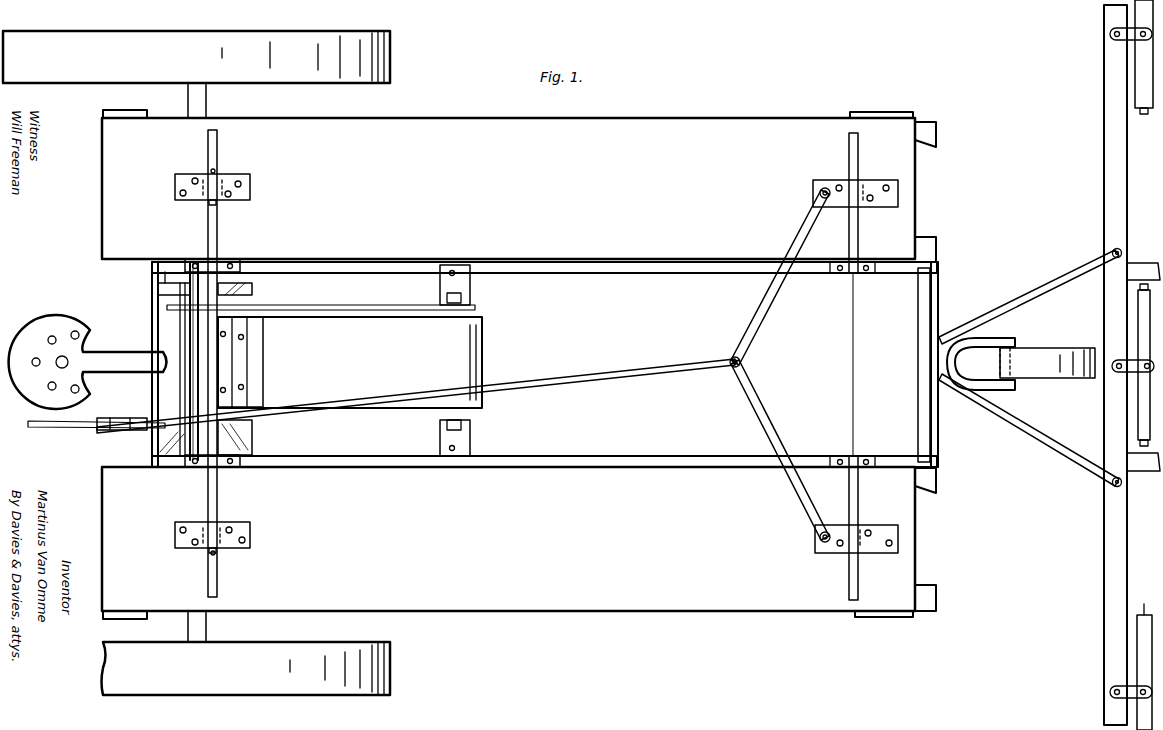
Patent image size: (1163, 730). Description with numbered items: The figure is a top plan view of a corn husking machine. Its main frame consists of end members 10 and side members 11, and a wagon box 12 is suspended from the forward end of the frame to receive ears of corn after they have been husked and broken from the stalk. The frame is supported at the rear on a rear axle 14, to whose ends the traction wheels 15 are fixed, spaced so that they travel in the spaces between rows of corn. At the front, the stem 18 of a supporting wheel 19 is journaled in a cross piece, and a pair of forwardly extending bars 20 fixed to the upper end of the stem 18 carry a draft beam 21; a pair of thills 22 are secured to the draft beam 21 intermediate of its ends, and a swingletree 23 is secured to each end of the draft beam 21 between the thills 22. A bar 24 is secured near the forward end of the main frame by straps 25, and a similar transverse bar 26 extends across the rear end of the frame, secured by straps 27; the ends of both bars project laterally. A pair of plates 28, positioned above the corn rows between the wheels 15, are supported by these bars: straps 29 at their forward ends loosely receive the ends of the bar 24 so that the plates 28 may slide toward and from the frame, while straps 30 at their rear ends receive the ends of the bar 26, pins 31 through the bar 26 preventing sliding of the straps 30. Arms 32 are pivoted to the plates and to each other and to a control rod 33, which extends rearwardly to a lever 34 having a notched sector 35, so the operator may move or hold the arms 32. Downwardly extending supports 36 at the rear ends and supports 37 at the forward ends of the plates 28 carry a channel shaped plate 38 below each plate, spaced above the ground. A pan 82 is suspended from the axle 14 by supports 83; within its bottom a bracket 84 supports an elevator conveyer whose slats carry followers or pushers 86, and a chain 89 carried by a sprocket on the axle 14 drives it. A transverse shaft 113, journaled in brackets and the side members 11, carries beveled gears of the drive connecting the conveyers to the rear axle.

The end members of the main frame 10 is at (152, 300).
The side members 11 is at (528, 266).
The wagon box 12 is at (648, 275).
The rear axle 14 is at (206, 100).
The traction wheels 15 is at (196, 363).
The stem 18 is at (945, 345).
The supporting wheel 19 is at (1045, 356).
The forwardly extending bars 20 is at (1035, 288).
The draft beam 21 is at (1104, 148).
The thills 22 is at (1140, 263).
The swingletree 23 is at (1140, 82).
The bar 24 is at (849, 151).
The straps 25 is at (862, 264).
The transverse bar 26 is at (217, 222).
The straps 27 is at (218, 262).
The plates 28 is at (519, 364).
The straps 29 is at (868, 185).
The straps 30 is at (250, 190).
The pins 31 is at (215, 170).
The arms 32 is at (760, 326).
The control rod 33 is at (515, 390).
The lever 34 is at (67, 426).
The notched sector 35 is at (113, 418).
The downwardly extending supports 36 is at (130, 115).
The supports 37 is at (875, 116).
The channel shaped plate 38 is at (936, 247).
The pan 82 is at (172, 337).
The supports 83 is at (262, 272).
The bracket 84 is at (483, 350).
The followers or pushers 86 is at (263, 360).
The chain 89 is at (363, 314).
The transverse shaft 113 is at (165, 275).